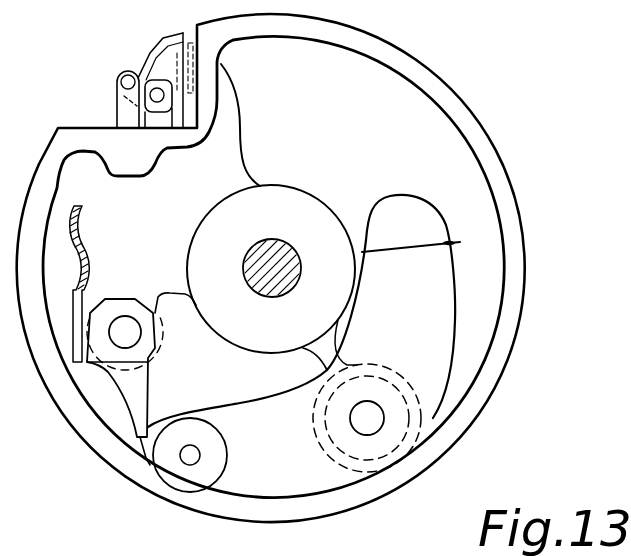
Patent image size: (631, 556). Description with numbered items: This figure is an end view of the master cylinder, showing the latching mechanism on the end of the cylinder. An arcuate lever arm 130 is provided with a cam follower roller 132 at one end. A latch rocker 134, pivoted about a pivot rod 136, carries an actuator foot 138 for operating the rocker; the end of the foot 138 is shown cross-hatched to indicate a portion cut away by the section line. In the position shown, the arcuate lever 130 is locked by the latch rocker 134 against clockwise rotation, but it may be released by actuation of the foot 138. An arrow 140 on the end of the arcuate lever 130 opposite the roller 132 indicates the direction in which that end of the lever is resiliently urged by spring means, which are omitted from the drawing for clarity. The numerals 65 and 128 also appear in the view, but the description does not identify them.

The latch assembly 65 is at (97, 84).
The roller 128 is at (370, 423).
The arcuate lever arm 130 is at (301, 311).
The cam follower roller 132 is at (167, 452).
The latch rocker 134 is at (138, 395).
The pivot rod 136 is at (123, 326).
The actuator foot 138 is at (78, 230).
The arrow 140 is at (430, 240).